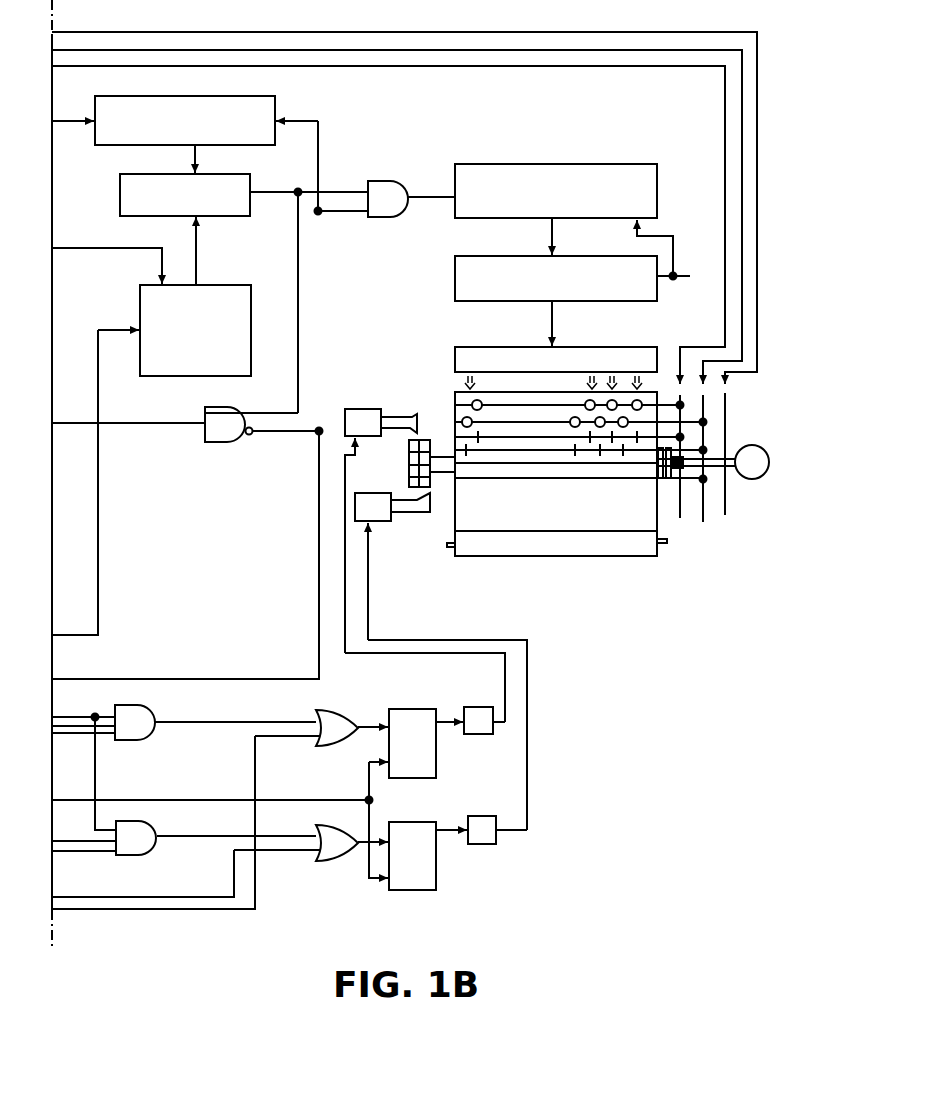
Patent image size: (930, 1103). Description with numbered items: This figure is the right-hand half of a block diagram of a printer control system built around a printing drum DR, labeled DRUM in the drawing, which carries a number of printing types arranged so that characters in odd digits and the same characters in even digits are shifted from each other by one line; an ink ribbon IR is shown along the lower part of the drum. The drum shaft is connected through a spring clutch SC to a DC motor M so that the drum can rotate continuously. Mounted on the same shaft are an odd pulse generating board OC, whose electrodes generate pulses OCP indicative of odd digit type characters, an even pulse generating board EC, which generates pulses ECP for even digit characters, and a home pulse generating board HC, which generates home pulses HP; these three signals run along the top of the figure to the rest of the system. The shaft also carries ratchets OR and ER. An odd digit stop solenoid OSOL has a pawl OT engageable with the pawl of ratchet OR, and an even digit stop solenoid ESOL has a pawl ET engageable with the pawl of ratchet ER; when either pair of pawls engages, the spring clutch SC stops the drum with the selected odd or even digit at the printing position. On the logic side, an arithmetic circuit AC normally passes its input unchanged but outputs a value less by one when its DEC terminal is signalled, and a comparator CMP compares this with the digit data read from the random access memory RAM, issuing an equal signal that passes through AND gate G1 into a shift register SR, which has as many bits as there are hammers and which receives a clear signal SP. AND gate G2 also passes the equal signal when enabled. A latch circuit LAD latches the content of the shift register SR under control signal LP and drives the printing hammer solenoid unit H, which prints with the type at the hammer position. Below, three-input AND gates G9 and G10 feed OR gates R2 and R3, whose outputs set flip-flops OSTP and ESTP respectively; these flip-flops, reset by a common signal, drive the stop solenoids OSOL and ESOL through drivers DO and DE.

The home pulse HP is at (688, 32).
The even contact pulse ECP is at (713, 50).
The odd contact pulse OCP is at (725, 78).
The arithmetic circuit AC is at (275, 98).
The comparator CMP is at (228, 217).
The AND gate G1 is at (388, 199).
The random access memory RAM is at (195, 330).
The AND gate G2 is at (229, 424).
The shift register SR is at (583, 164).
The shift register clear signal SP is at (659, 205).
The latch circuit LAD is at (556, 278).
The control signal LP is at (677, 253).
The printing hammer solenoid unit H is at (556, 359).
The printing drum DRUM is at (579, 474).
The ink ribbon IR is at (557, 543).
The printing drum DR is at (503, 527).
The spring clutch SC is at (696, 474).
The DC motor M is at (752, 462).
The odd pulse generating board OC is at (680, 518).
The even pulse generating board EC is at (703, 522).
The home pulse generating board HC is at (725, 515).
The odd digit stop solenoid OSOL is at (354, 409).
The pawl OT is at (407, 415).
The ratchet ER is at (427, 440).
The ratchet OR is at (409, 460).
The even digit stop solenoid ESOL is at (385, 521).
The pawl ET is at (423, 512).
The AND gate G9 is at (135, 722).
The AND gate G10 is at (136, 838).
The OR gate R2 is at (337, 728).
The OR gate R3 is at (337, 843).
The flip-flop OSTP is at (411, 732).
The flip-flop ESTP is at (410, 844).
The driver DO is at (480, 734).
The driver DE is at (485, 844).